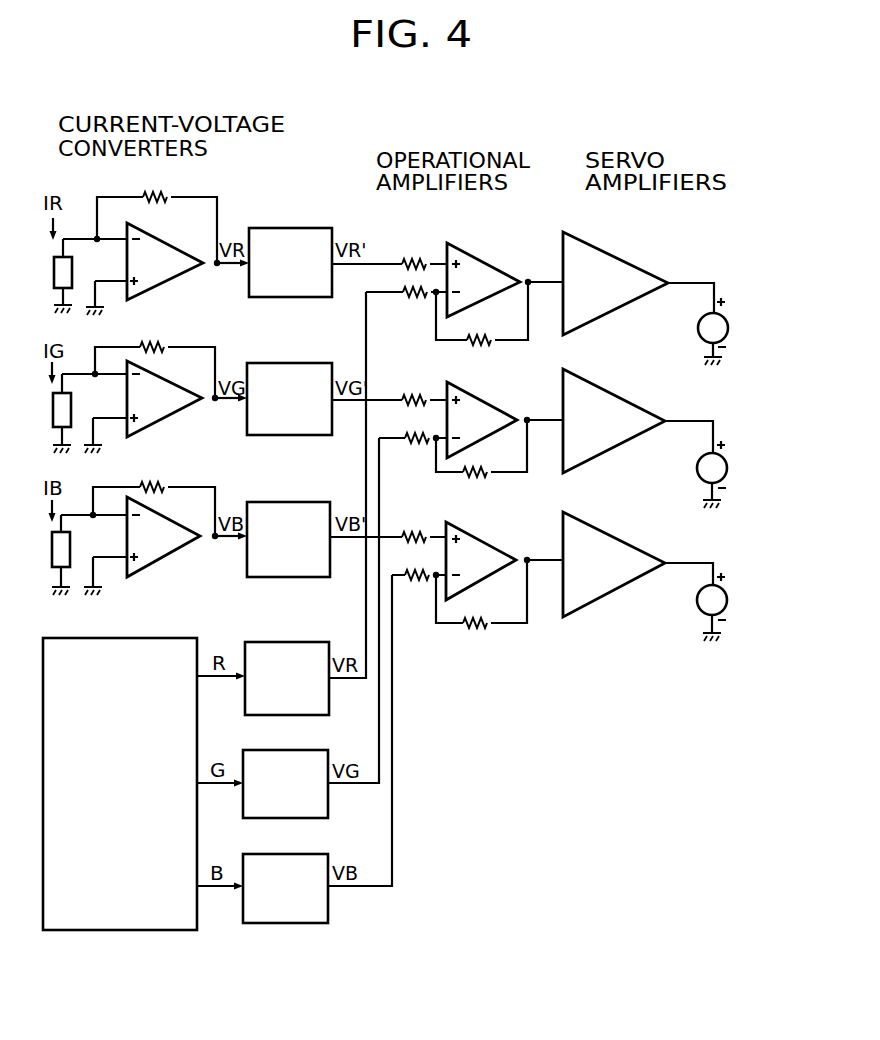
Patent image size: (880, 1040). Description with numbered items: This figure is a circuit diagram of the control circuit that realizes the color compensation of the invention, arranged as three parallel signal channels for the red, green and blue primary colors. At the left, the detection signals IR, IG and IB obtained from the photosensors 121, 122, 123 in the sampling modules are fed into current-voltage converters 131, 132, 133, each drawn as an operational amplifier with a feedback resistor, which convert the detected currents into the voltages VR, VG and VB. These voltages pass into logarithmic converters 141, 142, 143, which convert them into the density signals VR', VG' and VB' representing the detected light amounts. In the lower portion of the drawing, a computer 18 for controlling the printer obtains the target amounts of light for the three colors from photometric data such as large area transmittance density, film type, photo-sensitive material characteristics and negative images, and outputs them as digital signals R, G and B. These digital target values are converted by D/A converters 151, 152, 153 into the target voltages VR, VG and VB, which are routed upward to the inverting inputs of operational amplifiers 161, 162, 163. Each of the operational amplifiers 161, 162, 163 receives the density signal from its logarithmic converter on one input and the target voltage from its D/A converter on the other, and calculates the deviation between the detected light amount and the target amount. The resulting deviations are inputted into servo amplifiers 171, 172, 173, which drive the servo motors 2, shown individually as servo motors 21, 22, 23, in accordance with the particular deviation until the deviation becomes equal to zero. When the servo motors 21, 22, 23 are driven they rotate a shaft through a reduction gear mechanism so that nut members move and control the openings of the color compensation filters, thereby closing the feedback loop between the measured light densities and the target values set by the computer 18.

The servo motors 2 is at (730, 523).
The computer 18 is at (173, 638).
The servo motor 21 is at (728, 317).
The servo motor 22 is at (728, 460).
The servo motor 23 is at (726, 590).
The photosensor 121 is at (74, 274).
The photosensor 122 is at (72, 411).
The photosensor 123 is at (72, 551).
The current-voltage converter 131 is at (173, 242).
The current-voltage converter 132 is at (179, 387).
The current-voltage converter 133 is at (177, 526).
The logarithmic converter 141 is at (305, 227).
The logarithmic converter 142 is at (301, 363).
The logarithmic converter 143 is at (297, 502).
The D/A converter 151 is at (298, 642).
The D/A converter 152 is at (318, 730).
The D/A converter 153 is at (318, 837).
The operational amplifier 161 is at (480, 255).
The operational amplifier 162 is at (486, 397).
The operational amplifier 163 is at (481, 537).
The servo amplifier 171 is at (603, 250).
The servo amplifier 172 is at (607, 391).
The servo amplifier 173 is at (603, 527).